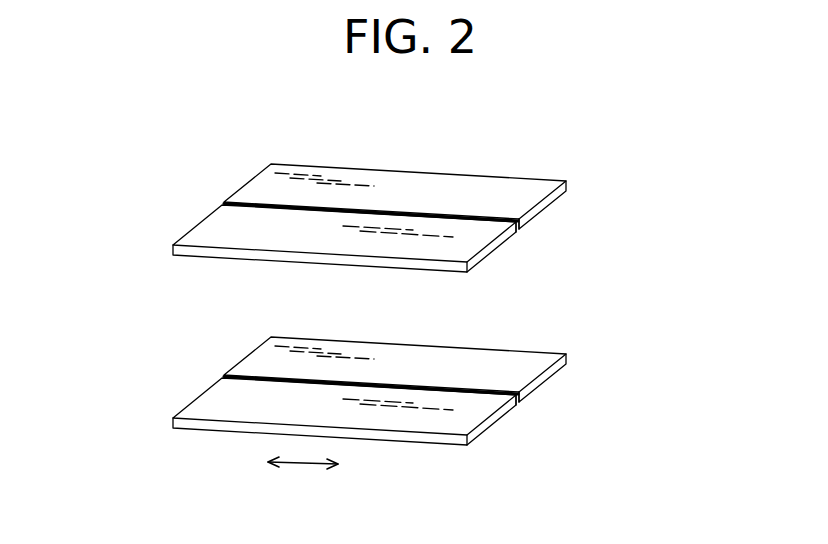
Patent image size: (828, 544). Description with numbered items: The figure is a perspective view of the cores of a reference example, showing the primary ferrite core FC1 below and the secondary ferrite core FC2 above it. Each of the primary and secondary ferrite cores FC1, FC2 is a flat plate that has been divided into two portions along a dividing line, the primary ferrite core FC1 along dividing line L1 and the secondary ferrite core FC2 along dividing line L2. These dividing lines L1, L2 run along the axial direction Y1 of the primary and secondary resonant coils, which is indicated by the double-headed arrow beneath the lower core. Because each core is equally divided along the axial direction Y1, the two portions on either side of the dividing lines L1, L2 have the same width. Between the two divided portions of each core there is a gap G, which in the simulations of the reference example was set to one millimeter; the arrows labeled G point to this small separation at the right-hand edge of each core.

The secondary ferrite core FC2 is at (519, 178).
The primary ferrite core FC1 is at (519, 351).
The dividing line L2 is at (401, 213).
The dividing line L1 is at (401, 386).
The gap G is at (521, 227).
The axial direction Y1 is at (305, 463).